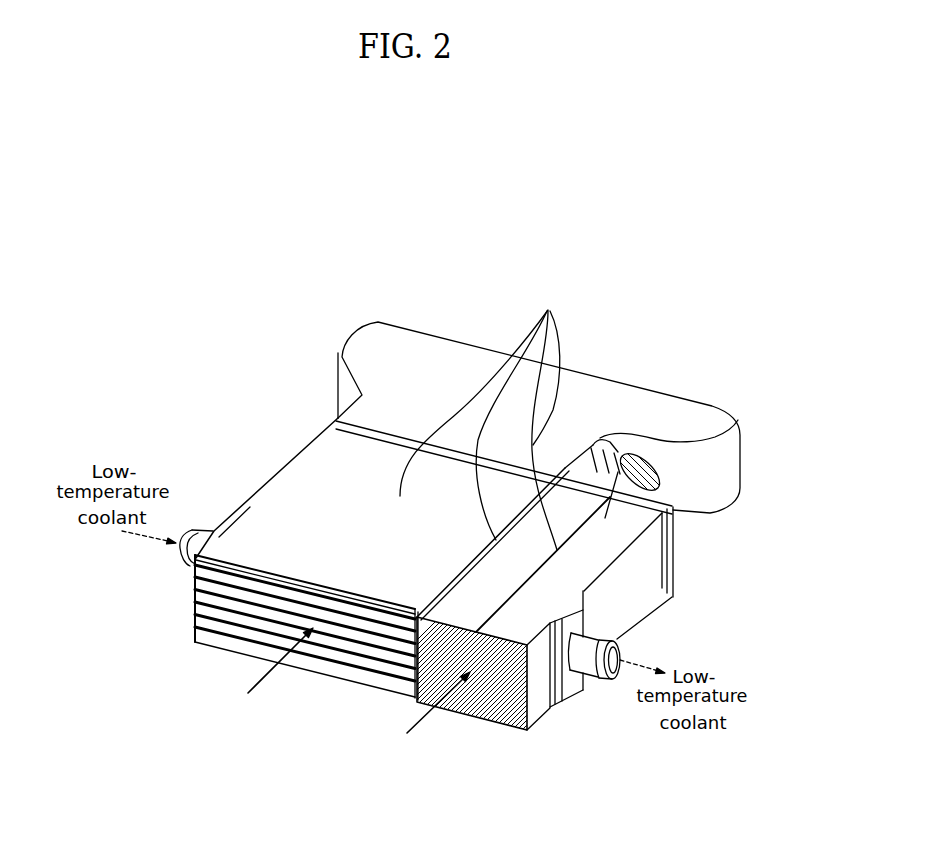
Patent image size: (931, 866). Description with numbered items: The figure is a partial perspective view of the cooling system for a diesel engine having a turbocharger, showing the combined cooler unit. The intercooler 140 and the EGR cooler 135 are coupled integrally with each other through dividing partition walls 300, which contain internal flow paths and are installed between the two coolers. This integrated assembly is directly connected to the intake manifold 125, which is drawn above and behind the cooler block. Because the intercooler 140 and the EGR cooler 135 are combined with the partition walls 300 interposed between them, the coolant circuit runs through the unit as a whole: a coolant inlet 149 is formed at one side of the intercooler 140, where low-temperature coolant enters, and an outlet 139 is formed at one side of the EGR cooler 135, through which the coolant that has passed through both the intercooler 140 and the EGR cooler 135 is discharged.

The intake manifold 125 is at (358, 341).
The partition walls 300 is at (481, 415).
The EGR cooler 135 is at (620, 470).
The intercooler 140 is at (313, 472).
The coolant inlet 149 is at (197, 530).
The outlet 139 is at (615, 679).